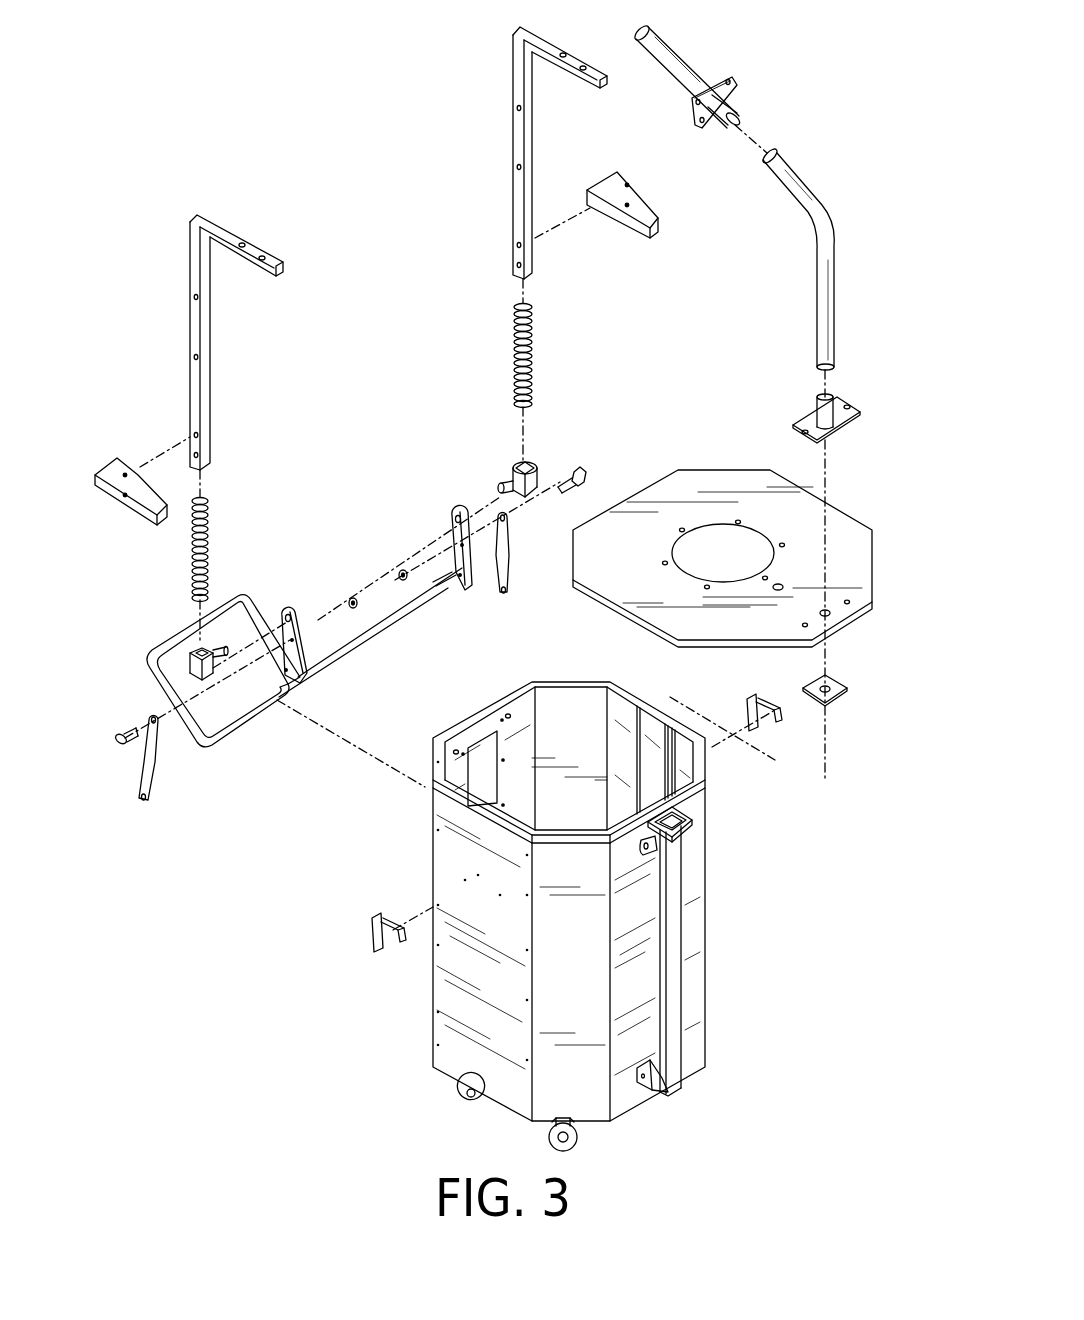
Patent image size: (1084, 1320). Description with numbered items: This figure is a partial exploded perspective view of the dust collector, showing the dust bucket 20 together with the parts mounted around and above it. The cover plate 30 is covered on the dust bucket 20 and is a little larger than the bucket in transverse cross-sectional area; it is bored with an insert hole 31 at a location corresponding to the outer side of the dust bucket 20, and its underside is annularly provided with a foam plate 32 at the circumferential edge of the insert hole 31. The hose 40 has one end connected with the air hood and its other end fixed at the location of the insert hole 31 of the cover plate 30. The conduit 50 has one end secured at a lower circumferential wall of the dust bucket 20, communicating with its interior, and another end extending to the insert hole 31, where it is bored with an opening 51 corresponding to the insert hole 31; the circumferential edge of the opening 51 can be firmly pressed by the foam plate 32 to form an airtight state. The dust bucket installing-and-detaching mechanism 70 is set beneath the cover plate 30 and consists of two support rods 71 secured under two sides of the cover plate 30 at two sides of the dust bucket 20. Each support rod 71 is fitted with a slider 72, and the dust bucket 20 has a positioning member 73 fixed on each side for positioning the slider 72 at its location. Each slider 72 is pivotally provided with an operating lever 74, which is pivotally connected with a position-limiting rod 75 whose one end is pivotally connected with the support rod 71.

The dust bucket 20 is at (422, 1012).
The cover plate 30 is at (724, 461).
The insert hole 31 is at (832, 616).
The foam plate 32 is at (836, 690).
The hose 40 is at (805, 296).
The conduit 50 is at (702, 957).
The opening 51 is at (700, 820).
The dust bucket installing-and-detaching mechanism 70 is at (268, 150).
The support rod 71 is at (207, 327).
The slider 72 is at (200, 650).
The positioning member 73 is at (372, 937).
The operating lever 74 is at (220, 608).
The position-limiting rod 75 is at (142, 800).